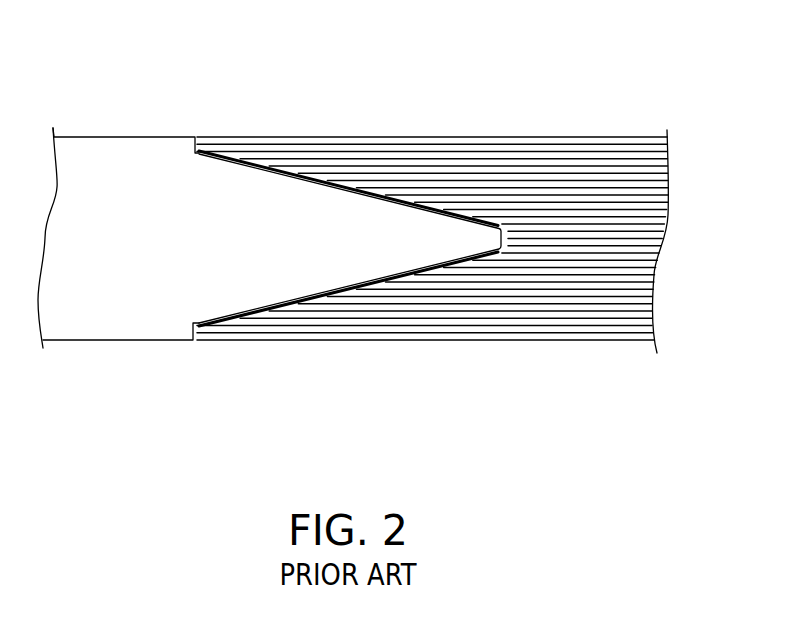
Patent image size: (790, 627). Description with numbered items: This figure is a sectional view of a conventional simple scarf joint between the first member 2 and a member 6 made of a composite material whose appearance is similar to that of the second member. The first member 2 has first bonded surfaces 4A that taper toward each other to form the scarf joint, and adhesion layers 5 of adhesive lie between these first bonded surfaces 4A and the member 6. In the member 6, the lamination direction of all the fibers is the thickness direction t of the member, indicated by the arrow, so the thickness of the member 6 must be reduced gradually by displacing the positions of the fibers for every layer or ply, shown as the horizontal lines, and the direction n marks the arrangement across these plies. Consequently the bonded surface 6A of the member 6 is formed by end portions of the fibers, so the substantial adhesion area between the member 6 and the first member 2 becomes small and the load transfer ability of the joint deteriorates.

The first member 2 is at (136, 137).
The first bonded surfaces 4A is at (212, 155).
The adhesion layers 5 is at (262, 167).
The member 6 is at (548, 137).
The bonded surface 6A is at (335, 178).
The normal direction n is at (398, 195).
The thickness direction t is at (702, 358).